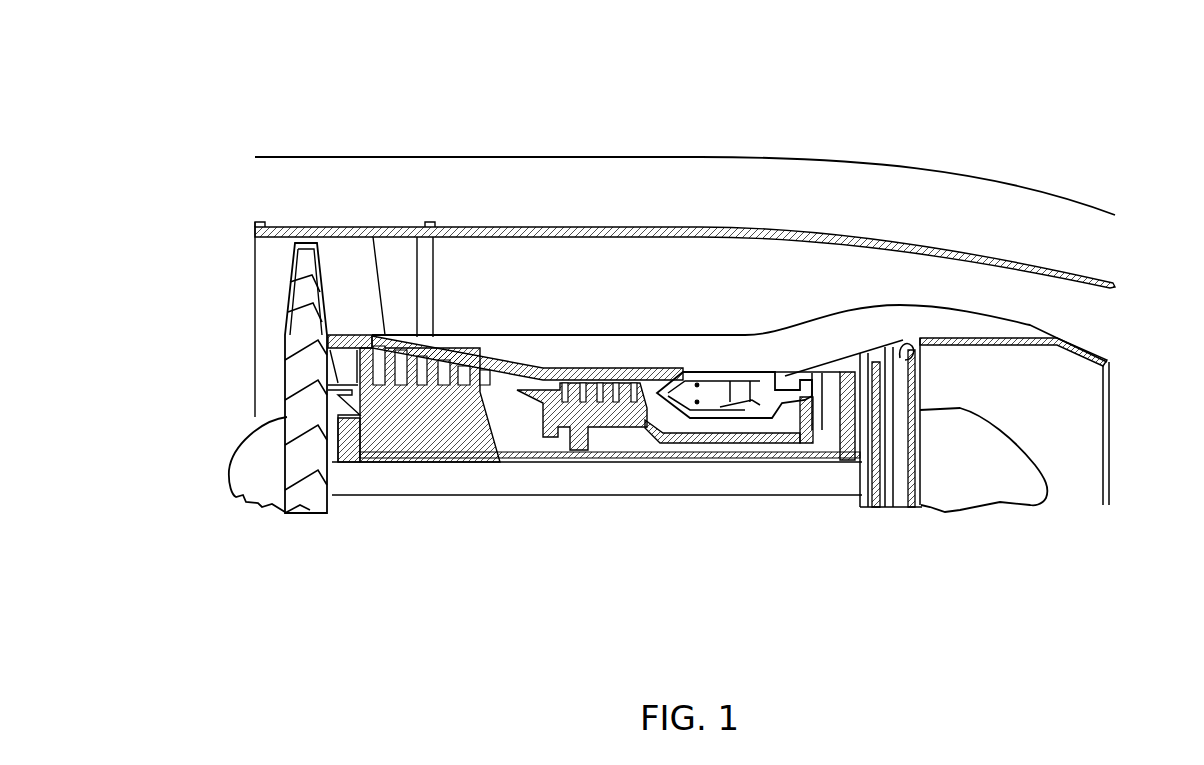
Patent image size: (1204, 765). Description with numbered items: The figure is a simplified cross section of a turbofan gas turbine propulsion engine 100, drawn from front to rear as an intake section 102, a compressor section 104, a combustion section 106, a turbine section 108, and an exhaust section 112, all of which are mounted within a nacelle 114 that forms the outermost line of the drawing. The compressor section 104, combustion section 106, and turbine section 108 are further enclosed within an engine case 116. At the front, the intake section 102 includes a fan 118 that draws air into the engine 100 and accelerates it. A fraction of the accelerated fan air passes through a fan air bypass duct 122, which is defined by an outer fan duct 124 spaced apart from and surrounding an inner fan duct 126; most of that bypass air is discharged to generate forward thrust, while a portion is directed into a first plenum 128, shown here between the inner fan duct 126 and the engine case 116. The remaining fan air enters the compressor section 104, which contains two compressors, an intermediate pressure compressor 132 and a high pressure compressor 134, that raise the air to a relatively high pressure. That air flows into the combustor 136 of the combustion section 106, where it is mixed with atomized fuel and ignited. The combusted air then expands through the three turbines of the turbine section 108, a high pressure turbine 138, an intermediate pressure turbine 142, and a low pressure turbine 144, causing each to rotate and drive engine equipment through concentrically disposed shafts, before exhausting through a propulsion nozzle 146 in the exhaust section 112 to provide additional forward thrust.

The turbofan gas turbine propulsion engine 100 is at (462, 130).
The intake section 102 is at (340, 575).
The compressor section 104 is at (650, 575).
The combustion section 106 is at (785, 575).
The turbine section 108 is at (925, 575).
The exhaust section 112 is at (1060, 575).
The nacelle 114 is at (976, 174).
The engine case 116 is at (350, 335).
The fan 118 is at (295, 330).
The fan air bypass duct 122 is at (518, 298).
The outer fan duct 124 is at (352, 227).
The inner fan duct 126 is at (678, 335).
The first plenum 128 is at (570, 334).
The intermediate pressure compressor 132 is at (440, 458).
The high pressure compressor 134 is at (606, 430).
The combustor 136 is at (768, 380).
The high pressure turbine 138 is at (808, 386).
The intermediate pressure turbine 142 is at (862, 366).
The low pressure turbine 144 is at (914, 358).
The propulsion nozzle 146 is at (1108, 430).